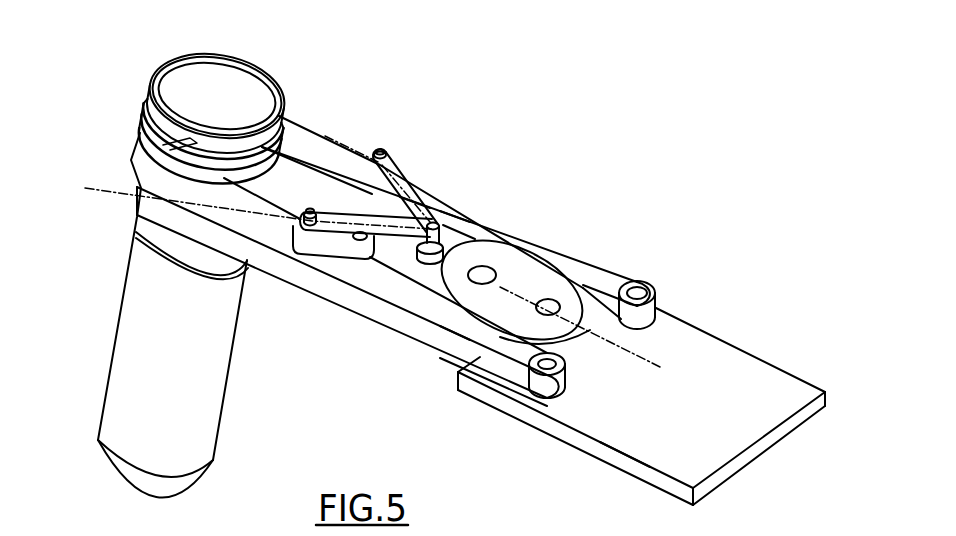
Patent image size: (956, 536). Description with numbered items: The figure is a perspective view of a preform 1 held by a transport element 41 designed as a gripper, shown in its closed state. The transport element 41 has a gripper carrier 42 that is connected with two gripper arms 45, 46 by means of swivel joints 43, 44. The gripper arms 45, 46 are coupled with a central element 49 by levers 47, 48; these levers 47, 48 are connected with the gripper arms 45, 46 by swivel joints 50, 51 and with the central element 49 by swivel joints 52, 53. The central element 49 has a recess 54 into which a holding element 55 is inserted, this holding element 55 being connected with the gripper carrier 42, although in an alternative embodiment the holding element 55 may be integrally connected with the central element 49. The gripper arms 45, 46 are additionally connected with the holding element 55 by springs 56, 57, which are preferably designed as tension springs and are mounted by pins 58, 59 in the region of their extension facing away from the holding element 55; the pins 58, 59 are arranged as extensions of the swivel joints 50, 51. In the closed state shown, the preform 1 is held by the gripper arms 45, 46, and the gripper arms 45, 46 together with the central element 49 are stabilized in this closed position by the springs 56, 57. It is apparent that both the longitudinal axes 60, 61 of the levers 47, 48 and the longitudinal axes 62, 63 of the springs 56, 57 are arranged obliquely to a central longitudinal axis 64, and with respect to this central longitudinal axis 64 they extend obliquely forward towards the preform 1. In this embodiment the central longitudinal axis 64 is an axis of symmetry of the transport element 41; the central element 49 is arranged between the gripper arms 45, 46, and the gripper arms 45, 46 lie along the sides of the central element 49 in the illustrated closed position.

The preform 1 is at (213, 390).
The transport element 41 is at (563, 217).
The gripper carrier 42 is at (703, 360).
The swivel joint 43 is at (543, 368).
The swivel joint 44 is at (638, 290).
The gripper arm 45 is at (388, 278).
The gripper arm 46 is at (470, 198).
The lever 47 is at (327, 246).
The lever 48 is at (427, 198).
The central element 49 is at (413, 262).
The swivel joint 50 is at (307, 231).
The swivel joint 51 is at (377, 150).
The swivel joint 52 is at (360, 268).
The swivel joint 53 is at (447, 192).
The recess 54 is at (438, 282).
The holding element 55 is at (577, 240).
The spring 56 is at (437, 300).
The spring 57 is at (400, 150).
The pin 58 is at (310, 210).
The pin 59 is at (385, 150).
The longitudinal axis 60 is at (97, 187).
The longitudinal axis 61 is at (335, 120).
The longitudinal axis 62 is at (345, 224).
The longitudinal axis 63 is at (497, 215).
The central longitudinal axis 64 is at (636, 376).